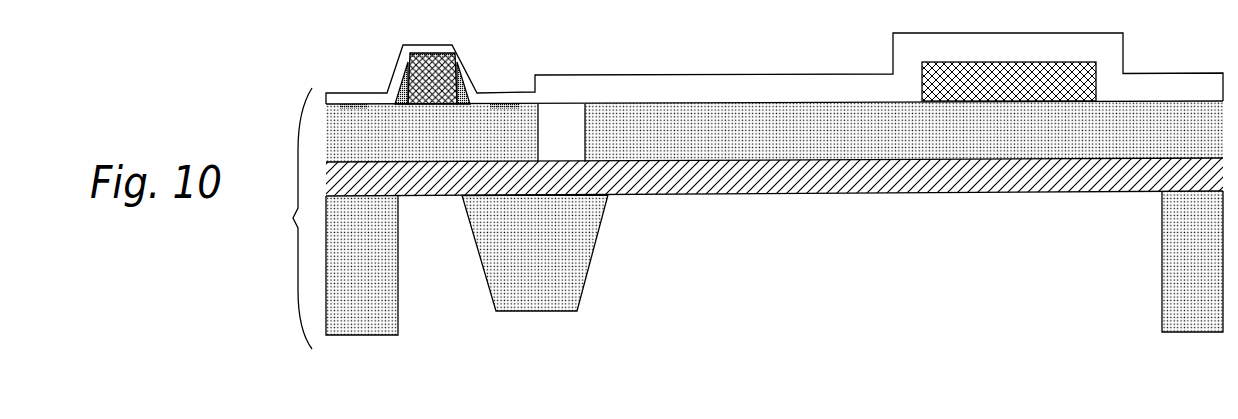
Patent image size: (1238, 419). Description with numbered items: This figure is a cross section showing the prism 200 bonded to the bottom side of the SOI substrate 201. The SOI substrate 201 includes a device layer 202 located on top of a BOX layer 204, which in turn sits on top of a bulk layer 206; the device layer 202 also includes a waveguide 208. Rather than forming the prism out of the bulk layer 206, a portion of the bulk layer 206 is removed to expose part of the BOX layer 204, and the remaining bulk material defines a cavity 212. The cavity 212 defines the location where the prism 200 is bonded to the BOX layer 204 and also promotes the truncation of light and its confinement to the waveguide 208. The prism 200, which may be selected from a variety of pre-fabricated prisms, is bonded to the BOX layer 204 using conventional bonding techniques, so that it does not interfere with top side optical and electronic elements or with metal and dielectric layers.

The prism 200 is at (532, 294).
The SOI substrate 201 is at (273, 232).
The device layer 202 is at (656, 156).
The BOX layer 204 is at (660, 190).
The bulk layer 206 is at (383, 287).
The waveguide 208 is at (888, 118).
The cavity 212 is at (753, 326).